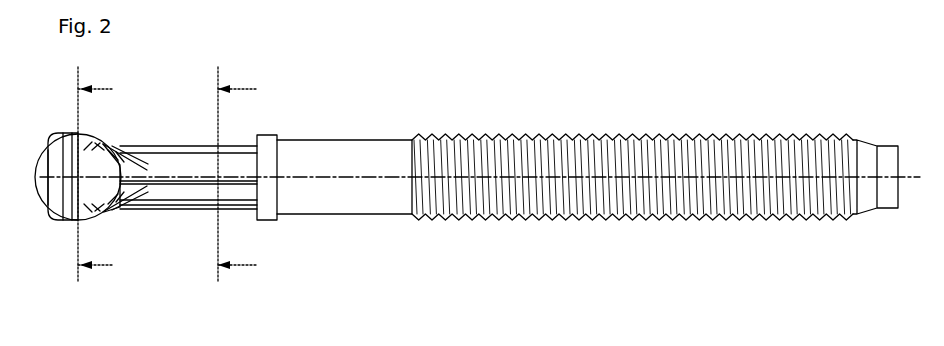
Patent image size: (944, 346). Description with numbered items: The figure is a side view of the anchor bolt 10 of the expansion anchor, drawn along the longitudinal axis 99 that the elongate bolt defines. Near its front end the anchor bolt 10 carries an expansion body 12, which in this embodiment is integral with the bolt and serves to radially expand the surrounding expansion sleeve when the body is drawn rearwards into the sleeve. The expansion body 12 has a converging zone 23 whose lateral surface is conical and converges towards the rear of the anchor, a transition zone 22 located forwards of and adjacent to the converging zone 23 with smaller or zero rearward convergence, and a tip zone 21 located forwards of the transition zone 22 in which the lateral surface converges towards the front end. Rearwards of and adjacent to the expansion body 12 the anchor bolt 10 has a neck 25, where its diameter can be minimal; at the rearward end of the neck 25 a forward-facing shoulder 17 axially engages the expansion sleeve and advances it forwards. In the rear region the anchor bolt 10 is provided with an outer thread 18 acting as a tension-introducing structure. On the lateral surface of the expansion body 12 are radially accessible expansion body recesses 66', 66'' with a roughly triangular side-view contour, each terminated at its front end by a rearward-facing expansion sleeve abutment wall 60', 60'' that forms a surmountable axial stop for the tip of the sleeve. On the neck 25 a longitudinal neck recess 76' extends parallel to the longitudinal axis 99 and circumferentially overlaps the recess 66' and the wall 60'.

The anchor bolt 10 is at (375, 162).
The expansion body 12 is at (88, 172).
The shoulder 17 is at (249, 185).
The outer thread 18 is at (633, 138).
The tip zone 21 is at (55, 224).
The transition zone 22 is at (68, 225).
The converging zone 23 is at (100, 230).
The neck 25 is at (180, 221).
The expansion sleeve abutment wall 60' is at (98, 102).
The expansion body recess 66' is at (124, 105).
The neck recess 76' is at (189, 168).
The expansion sleeve abutment wall 60'' is at (94, 260).
The expansion body recess 66'' is at (135, 257).
The longitudinal axis 99 is at (472, 177).